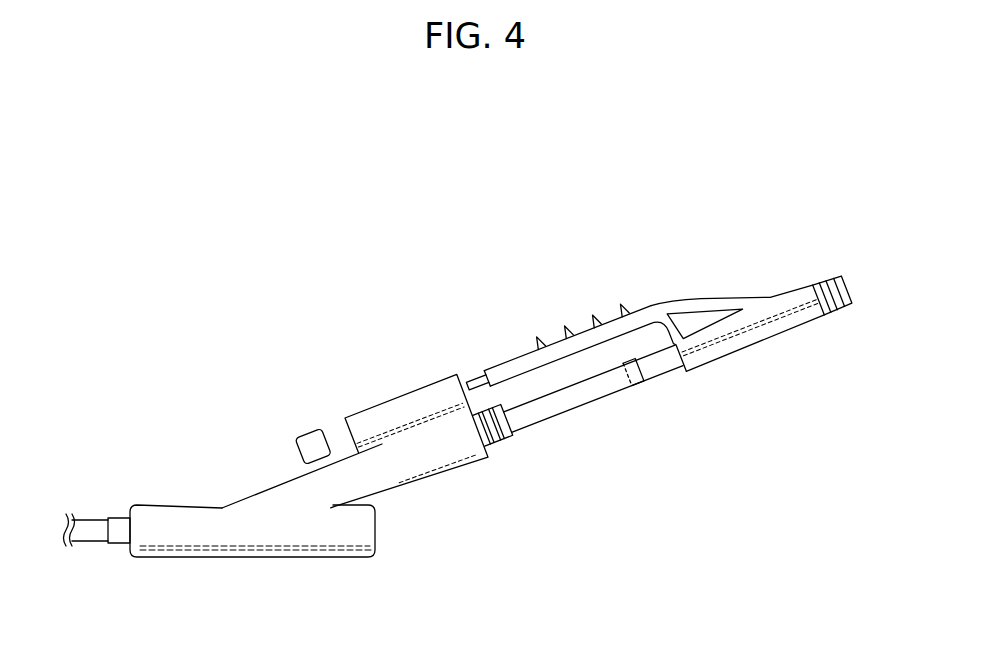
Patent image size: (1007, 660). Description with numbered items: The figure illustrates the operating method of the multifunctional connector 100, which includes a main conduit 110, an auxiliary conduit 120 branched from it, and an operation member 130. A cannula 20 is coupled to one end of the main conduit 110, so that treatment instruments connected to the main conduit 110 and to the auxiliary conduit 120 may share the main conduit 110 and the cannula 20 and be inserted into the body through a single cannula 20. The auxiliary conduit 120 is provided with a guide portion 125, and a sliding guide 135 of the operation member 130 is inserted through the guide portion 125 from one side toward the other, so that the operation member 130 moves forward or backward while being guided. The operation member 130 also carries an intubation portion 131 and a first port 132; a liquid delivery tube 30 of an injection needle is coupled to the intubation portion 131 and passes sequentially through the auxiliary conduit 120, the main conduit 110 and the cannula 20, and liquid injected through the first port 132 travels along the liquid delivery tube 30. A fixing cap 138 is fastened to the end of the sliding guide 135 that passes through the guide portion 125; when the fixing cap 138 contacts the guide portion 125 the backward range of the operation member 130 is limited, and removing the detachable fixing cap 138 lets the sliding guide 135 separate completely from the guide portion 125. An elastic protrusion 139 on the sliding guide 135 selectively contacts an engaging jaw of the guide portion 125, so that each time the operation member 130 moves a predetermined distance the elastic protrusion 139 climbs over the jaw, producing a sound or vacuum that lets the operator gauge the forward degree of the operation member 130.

The multifunctional connector 100 is at (91, 165).
The cannula 20 is at (88, 532).
The main conduit 110 is at (262, 538).
The auxiliary conduit 120 is at (422, 466).
The guide portion 125 is at (421, 403).
The fixing cap 138 is at (308, 437).
The liquid delivery tube 30 is at (560, 402).
The intubation portion 131 is at (657, 363).
The sliding guide 135 is at (515, 367).
The elastic protrusion 139 is at (593, 327).
The operation member 130 is at (748, 342).
The first port 132 is at (833, 277).